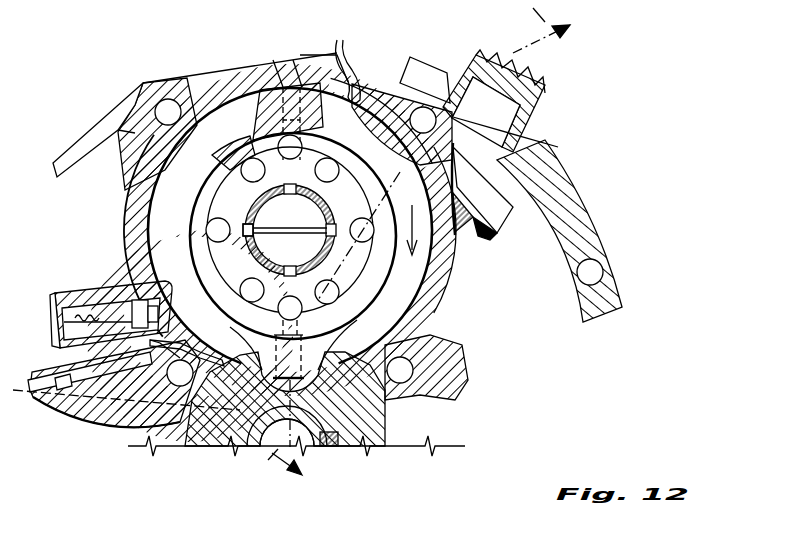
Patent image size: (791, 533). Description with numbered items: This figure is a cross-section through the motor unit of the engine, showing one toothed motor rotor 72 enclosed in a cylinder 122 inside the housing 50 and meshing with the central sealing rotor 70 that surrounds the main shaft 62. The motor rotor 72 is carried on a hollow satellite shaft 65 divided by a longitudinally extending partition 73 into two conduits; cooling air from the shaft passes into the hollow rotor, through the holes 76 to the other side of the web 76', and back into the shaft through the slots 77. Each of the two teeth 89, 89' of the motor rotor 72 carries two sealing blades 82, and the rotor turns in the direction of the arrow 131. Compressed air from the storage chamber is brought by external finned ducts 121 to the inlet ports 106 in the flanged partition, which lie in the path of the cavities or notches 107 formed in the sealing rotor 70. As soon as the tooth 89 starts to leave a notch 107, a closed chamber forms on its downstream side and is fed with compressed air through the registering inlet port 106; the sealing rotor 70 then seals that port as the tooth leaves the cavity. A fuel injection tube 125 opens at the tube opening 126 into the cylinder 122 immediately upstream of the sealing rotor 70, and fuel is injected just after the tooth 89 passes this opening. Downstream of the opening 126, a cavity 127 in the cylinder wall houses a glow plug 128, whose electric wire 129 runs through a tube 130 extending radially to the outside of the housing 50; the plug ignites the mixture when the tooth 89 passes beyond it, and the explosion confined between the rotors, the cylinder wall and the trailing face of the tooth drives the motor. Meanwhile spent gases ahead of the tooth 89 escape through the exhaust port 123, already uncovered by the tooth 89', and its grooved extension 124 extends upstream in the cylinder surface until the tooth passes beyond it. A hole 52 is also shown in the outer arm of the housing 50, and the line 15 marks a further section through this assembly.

The section line 15- 15 is at (416, 248).
The housing 50 is at (550, 202).
The hole 52 is at (592, 275).
The main shaft 62 is at (253, 440).
The satellite shaft 65 is at (267, 203).
The sealing rotor 70 is at (197, 428).
The motor rotor 72 is at (363, 295).
The longitudinally extending partition 73 is at (268, 233).
The holes 76 is at (230, 273).
The web 76' is at (221, 159).
The slots 77 is at (248, 234).
The sealing blade 82 is at (280, 75).
The tooth 89 is at (293, 397).
The tooth 89' is at (330, 60).
The inlet port 106 is at (305, 345).
The cavity or notch 107 is at (355, 440).
The finned duct 121 is at (535, 105).
The cylinder 122 is at (420, 297).
The exhaust port 123 is at (197, 85).
The grooved extension 124 is at (345, 82).
The fuel injection tube 125 is at (88, 367).
The tube opening 126 is at (218, 350).
The cavity 127 is at (147, 313).
The glow plug 128 is at (123, 278).
The electric wire 129 is at (78, 316).
The tube 130 is at (62, 288).
The arrow 131 is at (420, 247).